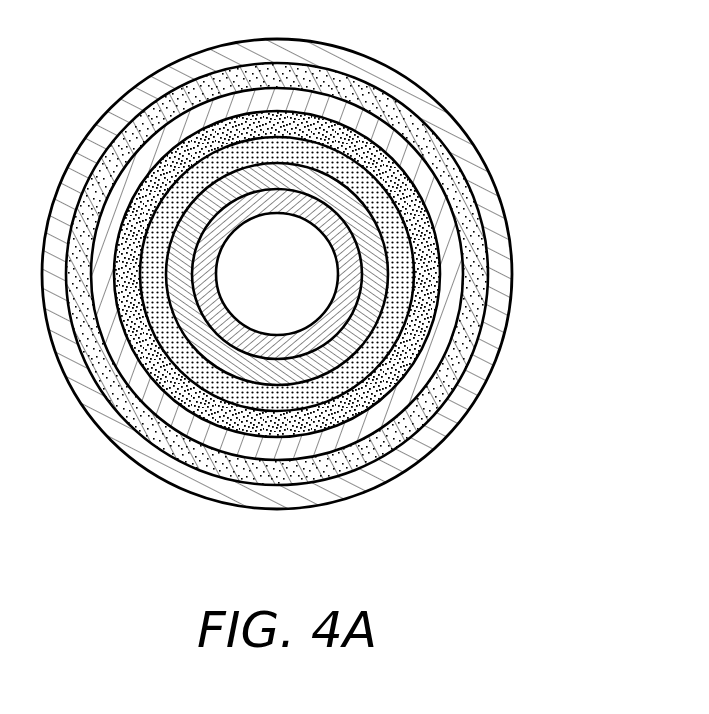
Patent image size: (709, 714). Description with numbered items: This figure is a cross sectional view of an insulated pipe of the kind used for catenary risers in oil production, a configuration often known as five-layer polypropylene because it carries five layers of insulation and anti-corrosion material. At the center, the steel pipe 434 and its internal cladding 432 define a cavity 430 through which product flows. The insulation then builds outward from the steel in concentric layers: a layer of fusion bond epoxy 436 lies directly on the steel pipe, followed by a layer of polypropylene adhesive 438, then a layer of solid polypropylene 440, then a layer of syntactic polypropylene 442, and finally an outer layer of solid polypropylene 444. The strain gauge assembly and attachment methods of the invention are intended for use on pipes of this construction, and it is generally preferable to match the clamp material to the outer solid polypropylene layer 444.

The cavity 430 is at (268, 323).
The internal cladding 432 is at (380, 390).
The steel pipe 434 is at (462, 365).
The fusion bond epoxy 436 is at (410, 313).
The polypropylene adhesive 438 is at (437, 252).
The solid polypropylene 440 is at (435, 197).
The syntactic polypropylene 442 is at (430, 123).
The solid polypropylene 444 is at (407, 90).